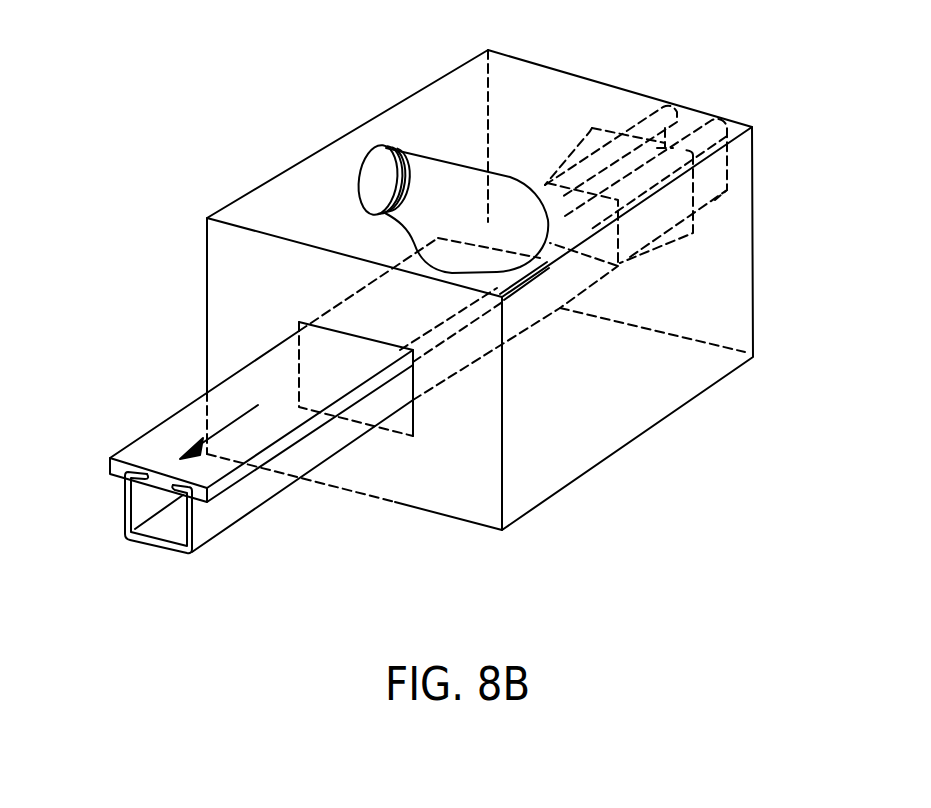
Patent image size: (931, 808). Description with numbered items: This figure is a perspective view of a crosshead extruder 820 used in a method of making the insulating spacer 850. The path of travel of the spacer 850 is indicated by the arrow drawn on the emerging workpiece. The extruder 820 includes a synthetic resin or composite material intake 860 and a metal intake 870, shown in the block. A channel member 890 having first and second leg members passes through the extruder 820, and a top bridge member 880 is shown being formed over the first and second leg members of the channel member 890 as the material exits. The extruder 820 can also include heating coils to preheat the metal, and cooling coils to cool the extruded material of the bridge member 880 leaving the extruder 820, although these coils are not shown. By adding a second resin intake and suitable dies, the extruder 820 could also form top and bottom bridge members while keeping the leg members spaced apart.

The crosshead extruder 820 is at (437, 79).
The spacer 850 is at (121, 506).
The synthetic resin or composite material intake 860 is at (360, 175).
The metal intake 870 is at (702, 111).
The bridge member 880 is at (158, 420).
The channel member 890 is at (223, 510).